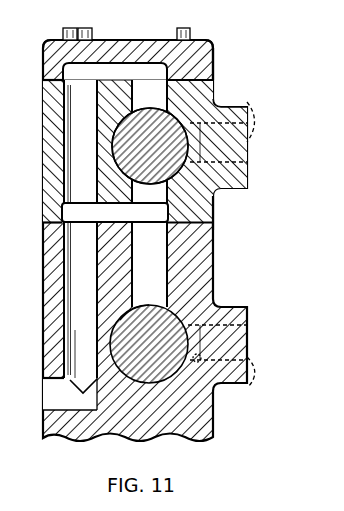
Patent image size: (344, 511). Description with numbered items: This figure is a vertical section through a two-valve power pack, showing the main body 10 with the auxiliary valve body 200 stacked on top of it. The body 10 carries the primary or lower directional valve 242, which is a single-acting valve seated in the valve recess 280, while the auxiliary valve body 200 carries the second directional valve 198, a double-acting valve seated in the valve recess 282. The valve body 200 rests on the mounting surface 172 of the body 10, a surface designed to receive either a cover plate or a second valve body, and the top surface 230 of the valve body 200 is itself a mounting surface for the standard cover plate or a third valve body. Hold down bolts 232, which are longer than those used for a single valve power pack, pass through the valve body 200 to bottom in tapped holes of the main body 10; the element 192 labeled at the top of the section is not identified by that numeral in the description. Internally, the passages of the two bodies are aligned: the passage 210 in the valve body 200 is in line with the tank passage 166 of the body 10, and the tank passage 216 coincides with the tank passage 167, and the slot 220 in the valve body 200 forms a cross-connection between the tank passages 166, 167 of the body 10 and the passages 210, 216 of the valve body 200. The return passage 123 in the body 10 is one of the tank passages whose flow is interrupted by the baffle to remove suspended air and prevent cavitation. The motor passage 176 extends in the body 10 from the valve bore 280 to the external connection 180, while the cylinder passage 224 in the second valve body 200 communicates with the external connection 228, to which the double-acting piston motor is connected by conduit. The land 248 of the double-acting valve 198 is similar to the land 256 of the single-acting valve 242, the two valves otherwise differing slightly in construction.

The body 10 is at (145, 240).
The return passage 123 is at (70, 398).
The tank passage 166 is at (166, 248).
The tank passage 167 is at (70, 253).
The mounting surface 172 is at (214, 213).
The motor passage 176 is at (188, 362).
The external connection 180 is at (248, 385).
The insert cap 192 is at (115, 72).
The second directional valve 198 is at (150, 146).
The auxiliary valve body 200 is at (186, 177).
The passage 210 is at (152, 92).
The tank passage 216 is at (70, 152).
The slot 220 is at (105, 214).
The cylinder passage 224 is at (145, 151).
The external connection 228 is at (251, 100).
The top surface 230 is at (204, 77).
The hold down bolts 232 is at (66, 27).
The primary directional valve 242 is at (149, 344).
The land 248 is at (165, 190).
The land 256 is at (150, 306).
The valve recess 280 is at (157, 381).
The valve recess 282 is at (120, 163).